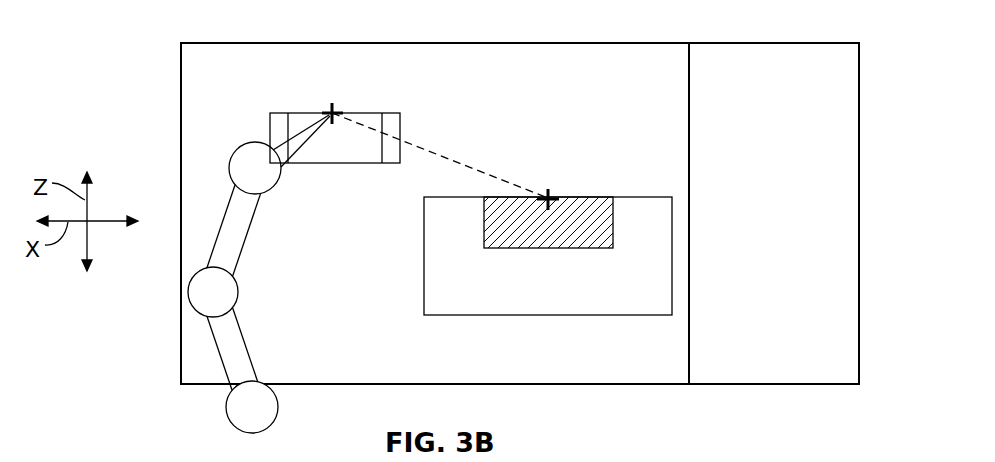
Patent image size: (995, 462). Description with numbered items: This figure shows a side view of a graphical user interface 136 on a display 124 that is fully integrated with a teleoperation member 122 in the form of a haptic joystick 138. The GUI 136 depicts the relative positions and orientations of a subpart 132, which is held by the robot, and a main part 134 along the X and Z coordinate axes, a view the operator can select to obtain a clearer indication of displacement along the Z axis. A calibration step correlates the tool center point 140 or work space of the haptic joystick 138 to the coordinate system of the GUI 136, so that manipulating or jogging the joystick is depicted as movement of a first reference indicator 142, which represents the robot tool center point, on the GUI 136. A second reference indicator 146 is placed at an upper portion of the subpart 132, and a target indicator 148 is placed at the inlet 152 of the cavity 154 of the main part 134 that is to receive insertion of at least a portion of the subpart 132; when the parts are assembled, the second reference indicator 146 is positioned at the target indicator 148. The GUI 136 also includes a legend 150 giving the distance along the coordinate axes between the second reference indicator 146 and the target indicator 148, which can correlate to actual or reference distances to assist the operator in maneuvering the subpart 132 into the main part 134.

The graphical user interface 136 is at (587, 80).
The display 124 is at (787, 42).
The legend 150 is at (760, 287).
The teleoperation member 122 is at (240, 410).
The haptic joystick 138 is at (234, 287).
The tool center point 140 is at (324, 108).
The subpart 132 is at (392, 112).
The first reference indicator 142 is at (335, 138).
The second reference indicator 146 is at (334, 104).
The main part 134 is at (550, 293).
The inlet 152 is at (587, 197).
The cavity 154 is at (496, 228).
The target indicator 148 is at (549, 191).